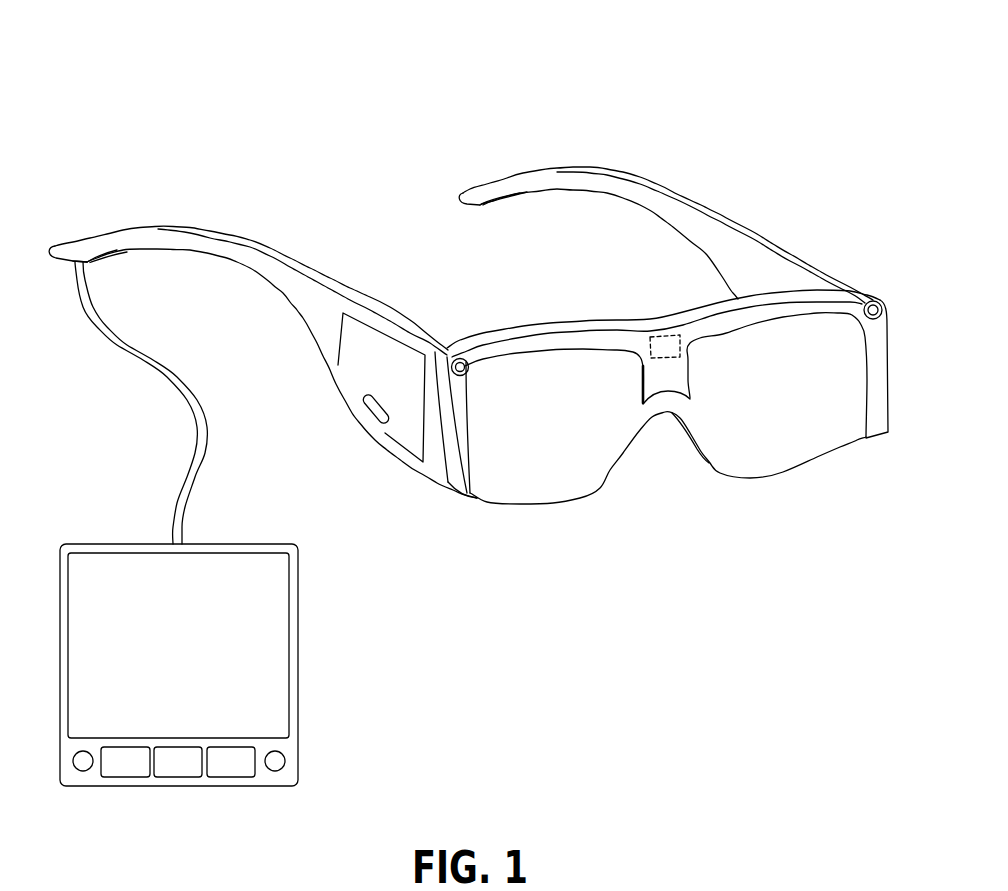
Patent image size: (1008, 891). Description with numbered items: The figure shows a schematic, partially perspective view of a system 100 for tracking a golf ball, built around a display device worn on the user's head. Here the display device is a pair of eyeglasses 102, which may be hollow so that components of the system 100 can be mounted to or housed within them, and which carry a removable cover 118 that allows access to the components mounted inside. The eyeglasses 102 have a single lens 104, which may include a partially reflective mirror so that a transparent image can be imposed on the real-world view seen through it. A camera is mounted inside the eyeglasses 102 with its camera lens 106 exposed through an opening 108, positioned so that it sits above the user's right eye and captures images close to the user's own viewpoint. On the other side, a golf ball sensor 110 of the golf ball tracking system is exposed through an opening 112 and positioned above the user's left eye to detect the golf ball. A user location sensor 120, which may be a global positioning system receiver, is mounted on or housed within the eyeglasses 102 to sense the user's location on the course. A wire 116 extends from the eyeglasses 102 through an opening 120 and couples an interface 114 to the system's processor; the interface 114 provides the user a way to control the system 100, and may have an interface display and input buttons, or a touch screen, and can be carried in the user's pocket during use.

The system 100 is at (297, 81).
The eyeglasses 102 is at (543, 326).
The lens 104 is at (800, 447).
The camera lens 106 is at (470, 366).
The opening 108 is at (458, 357).
The golf ball sensor 110 is at (863, 314).
The opening 112 is at (873, 299).
The interface 114 is at (275, 673).
The wire 116 is at (199, 462).
The removable cover 118 is at (402, 427).
The user location sensor 120 is at (79, 265).